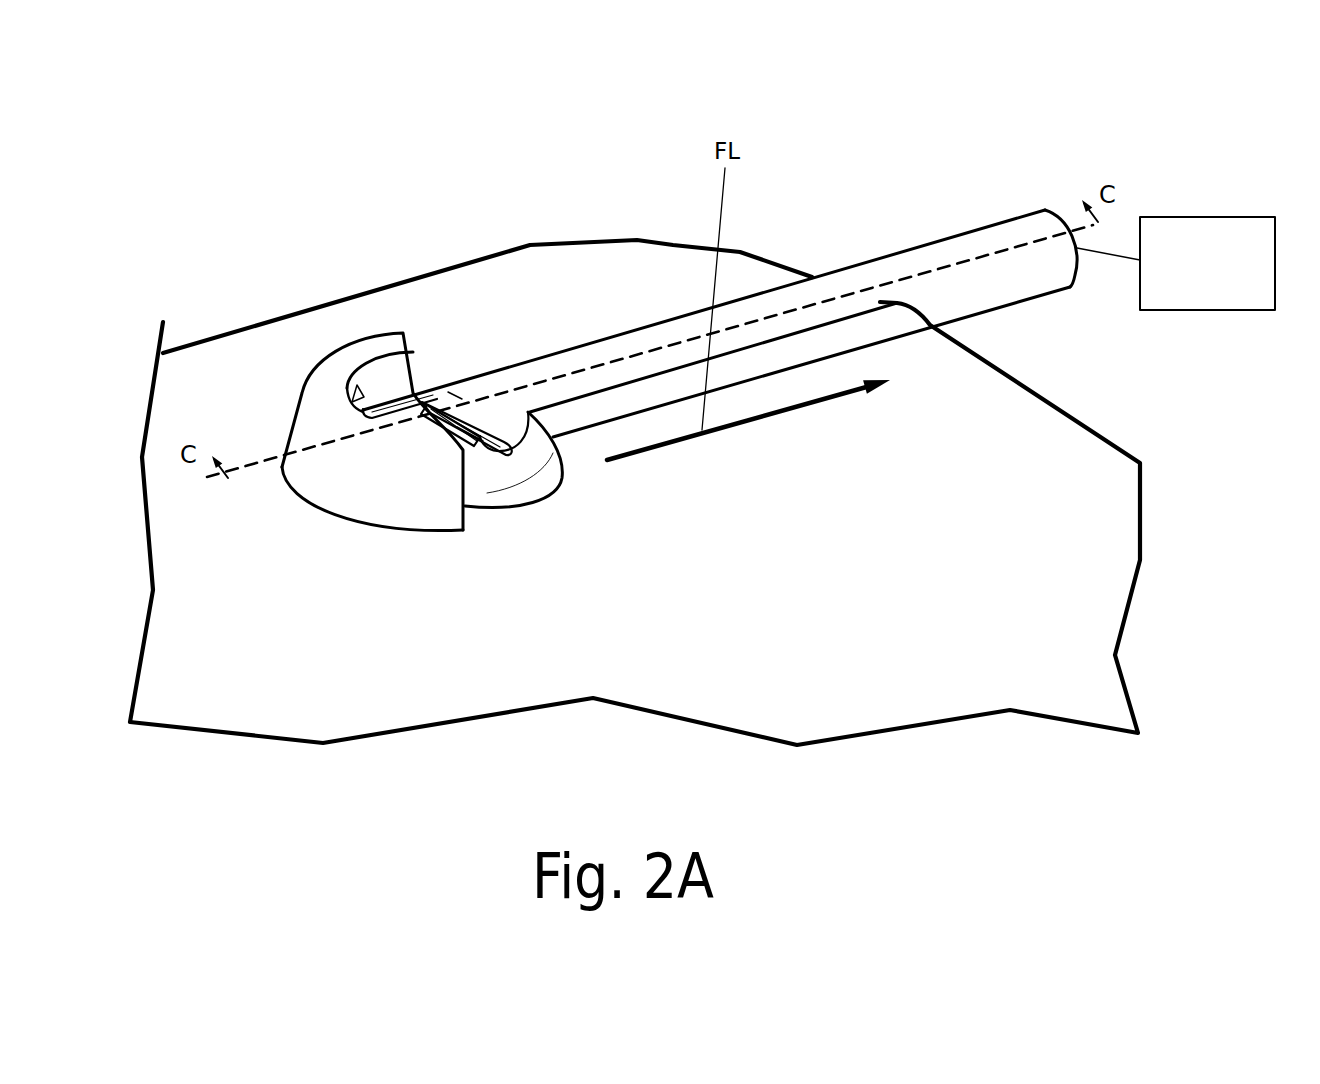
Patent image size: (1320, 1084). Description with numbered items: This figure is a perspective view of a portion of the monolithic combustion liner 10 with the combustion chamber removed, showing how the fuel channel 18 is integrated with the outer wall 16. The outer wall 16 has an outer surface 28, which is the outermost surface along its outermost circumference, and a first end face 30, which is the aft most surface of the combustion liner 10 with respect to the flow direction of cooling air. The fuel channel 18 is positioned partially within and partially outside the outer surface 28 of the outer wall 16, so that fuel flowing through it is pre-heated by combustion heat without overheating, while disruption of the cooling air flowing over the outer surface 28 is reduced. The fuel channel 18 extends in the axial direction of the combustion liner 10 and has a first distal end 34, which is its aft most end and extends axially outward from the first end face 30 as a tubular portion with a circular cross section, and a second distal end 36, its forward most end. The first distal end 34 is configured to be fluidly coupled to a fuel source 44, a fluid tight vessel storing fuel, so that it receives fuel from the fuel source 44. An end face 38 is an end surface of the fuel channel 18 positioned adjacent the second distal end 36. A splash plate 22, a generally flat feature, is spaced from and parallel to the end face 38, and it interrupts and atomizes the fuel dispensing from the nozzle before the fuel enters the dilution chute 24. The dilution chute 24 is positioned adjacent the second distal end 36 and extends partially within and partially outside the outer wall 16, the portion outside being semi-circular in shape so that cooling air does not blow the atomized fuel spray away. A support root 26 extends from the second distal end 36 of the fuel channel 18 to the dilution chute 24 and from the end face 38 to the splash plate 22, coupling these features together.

The combustion liner 10 is at (240, 178).
The outer wall 16 is at (1010, 653).
The fuel channel 18 is at (917, 238).
The splash plate 22 is at (465, 432).
The dilution chute 24 is at (360, 463).
The support root 26 is at (387, 400).
The outer surface 28 is at (530, 290).
The first end face 30 is at (1077, 413).
The first distal end 34 is at (1025, 240).
The second distal end 36 is at (460, 390).
The end face 38 is at (483, 440).
The fuel source 44 is at (1176, 263).